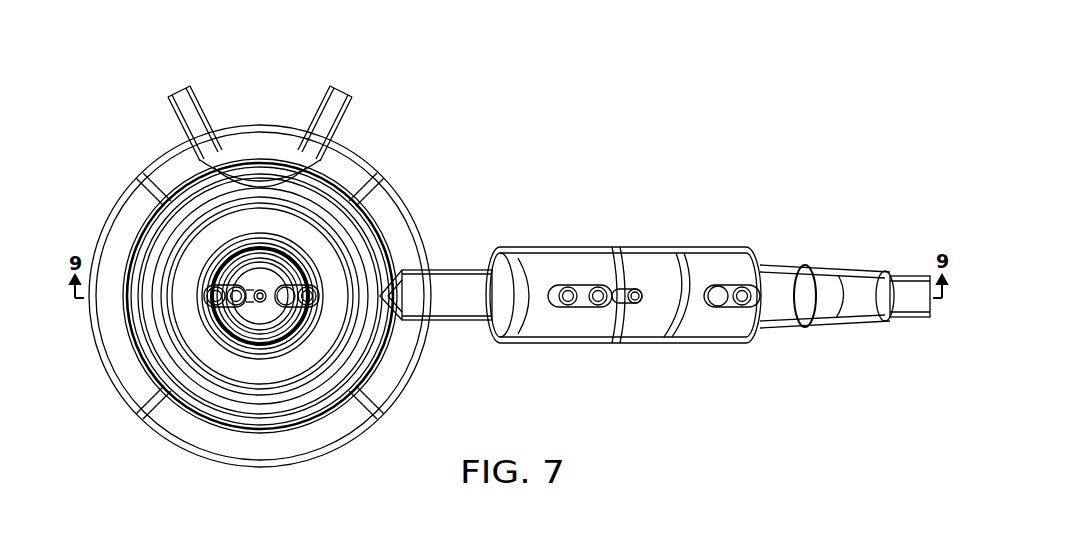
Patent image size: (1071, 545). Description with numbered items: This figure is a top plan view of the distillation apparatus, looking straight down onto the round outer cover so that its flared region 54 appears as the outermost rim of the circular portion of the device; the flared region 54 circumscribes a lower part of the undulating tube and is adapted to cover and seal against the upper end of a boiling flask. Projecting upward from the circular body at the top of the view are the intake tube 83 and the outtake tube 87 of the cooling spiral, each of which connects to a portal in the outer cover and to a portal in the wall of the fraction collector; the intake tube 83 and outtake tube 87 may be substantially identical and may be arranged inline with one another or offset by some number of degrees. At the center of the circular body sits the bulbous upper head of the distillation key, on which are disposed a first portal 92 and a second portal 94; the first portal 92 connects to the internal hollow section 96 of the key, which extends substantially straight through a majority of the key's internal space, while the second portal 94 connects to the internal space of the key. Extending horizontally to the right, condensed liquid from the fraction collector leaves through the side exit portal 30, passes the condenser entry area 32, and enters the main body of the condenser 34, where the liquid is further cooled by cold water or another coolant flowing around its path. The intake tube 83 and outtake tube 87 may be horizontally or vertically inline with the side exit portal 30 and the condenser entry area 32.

The flared region 54 is at (268, 463).
The condenser entry area 32 is at (433, 272).
The outtake tube 87 is at (185, 87).
The intake tube 83 is at (343, 90).
The internal hollow section 96 is at (283, 265).
The first portal 92 is at (211, 298).
The second portal 94 is at (316, 302).
The side exit portal 30 is at (406, 272).
The condenser 34 is at (553, 255).